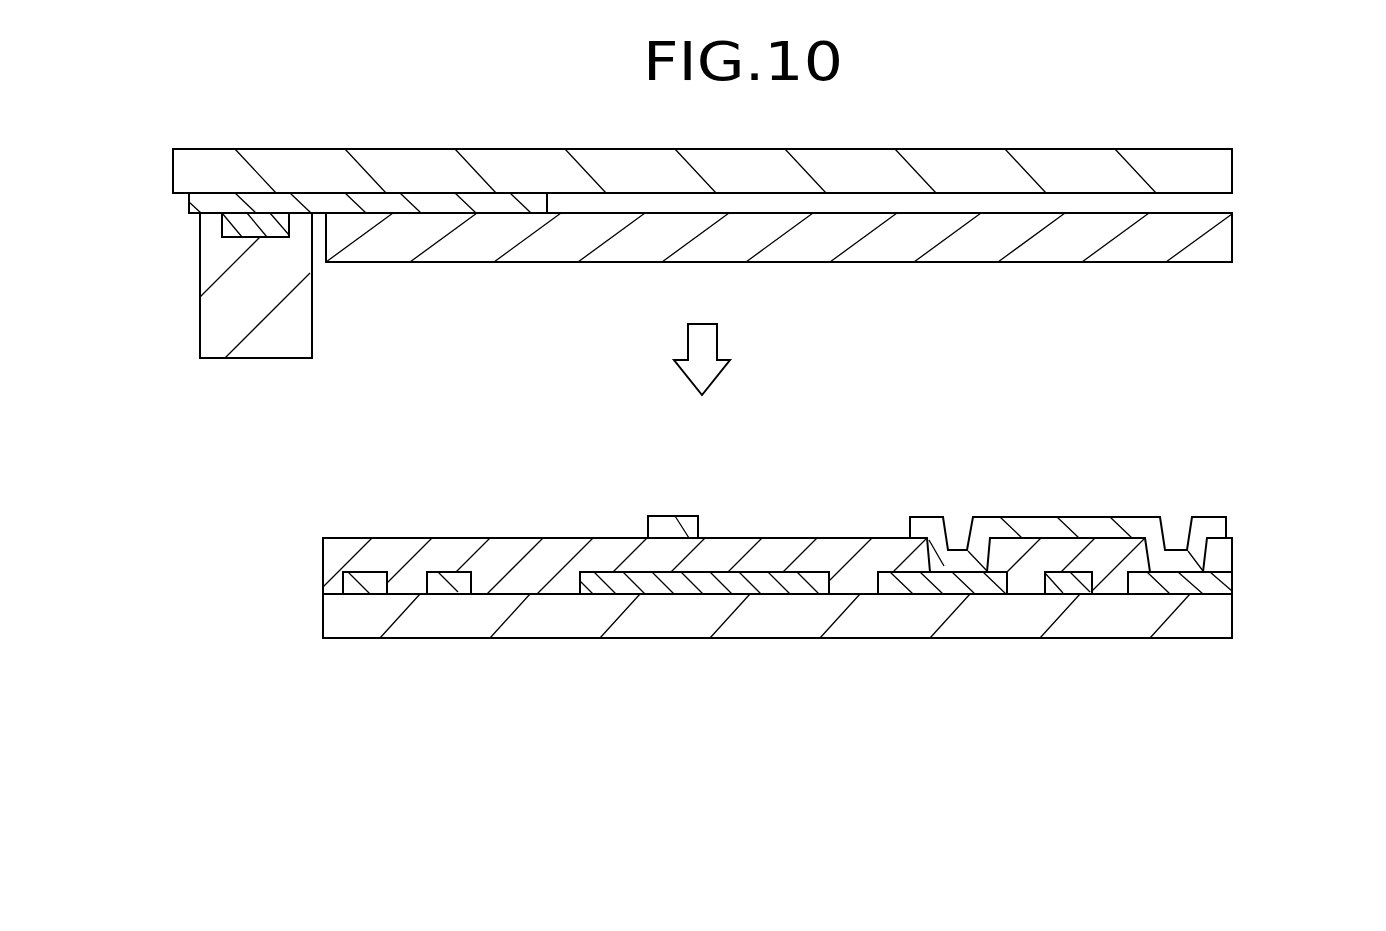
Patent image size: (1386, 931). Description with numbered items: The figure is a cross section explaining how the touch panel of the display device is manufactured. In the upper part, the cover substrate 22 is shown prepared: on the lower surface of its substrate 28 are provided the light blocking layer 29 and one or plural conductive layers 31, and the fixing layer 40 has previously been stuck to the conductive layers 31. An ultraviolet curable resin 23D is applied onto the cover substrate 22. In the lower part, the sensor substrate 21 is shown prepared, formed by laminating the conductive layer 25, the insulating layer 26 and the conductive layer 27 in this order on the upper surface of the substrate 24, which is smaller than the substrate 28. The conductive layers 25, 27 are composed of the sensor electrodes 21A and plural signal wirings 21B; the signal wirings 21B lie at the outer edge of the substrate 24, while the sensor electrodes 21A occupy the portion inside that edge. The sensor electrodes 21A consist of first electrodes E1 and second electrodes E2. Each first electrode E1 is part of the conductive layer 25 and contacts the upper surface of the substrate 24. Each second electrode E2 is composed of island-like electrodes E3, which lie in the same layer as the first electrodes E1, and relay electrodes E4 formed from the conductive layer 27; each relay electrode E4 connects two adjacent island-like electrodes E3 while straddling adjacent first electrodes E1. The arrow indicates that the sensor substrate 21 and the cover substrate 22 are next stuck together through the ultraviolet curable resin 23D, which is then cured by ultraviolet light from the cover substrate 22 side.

The cover substrate 22 is at (753, 205).
The substrate 28 is at (1232, 170).
The ultraviolet curable resin 23D is at (812, 233).
The light blocking layer 29 is at (370, 200).
The conductive layer 31 is at (267, 226).
The fixing layer 40 is at (257, 345).
The sensor substrate 21 is at (828, 613).
The substrate 24 is at (1232, 614).
The conductive layer 25 is at (1232, 580).
The insulating layer 26 is at (1232, 552).
The conductive layer 27 is at (1228, 525).
The signal wirings 21B is at (373, 580).
The sensor electrodes 21A is at (1085, 748).
The first electrodes E1 is at (773, 585).
The second electrodes E2 is at (673, 525).
The island-like electrodes E3 is at (985, 585).
The relay electrodes E4 is at (1055, 522).